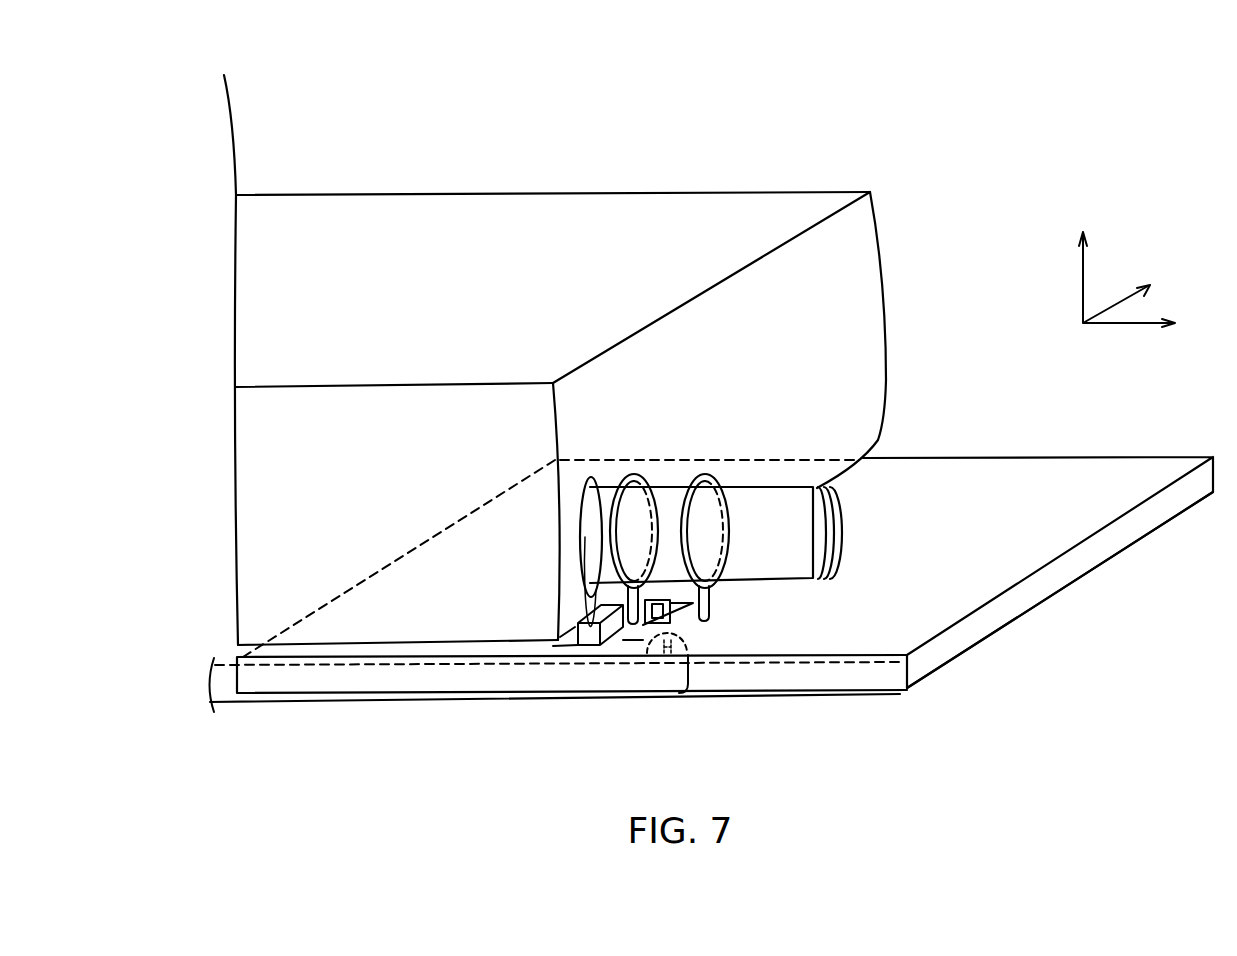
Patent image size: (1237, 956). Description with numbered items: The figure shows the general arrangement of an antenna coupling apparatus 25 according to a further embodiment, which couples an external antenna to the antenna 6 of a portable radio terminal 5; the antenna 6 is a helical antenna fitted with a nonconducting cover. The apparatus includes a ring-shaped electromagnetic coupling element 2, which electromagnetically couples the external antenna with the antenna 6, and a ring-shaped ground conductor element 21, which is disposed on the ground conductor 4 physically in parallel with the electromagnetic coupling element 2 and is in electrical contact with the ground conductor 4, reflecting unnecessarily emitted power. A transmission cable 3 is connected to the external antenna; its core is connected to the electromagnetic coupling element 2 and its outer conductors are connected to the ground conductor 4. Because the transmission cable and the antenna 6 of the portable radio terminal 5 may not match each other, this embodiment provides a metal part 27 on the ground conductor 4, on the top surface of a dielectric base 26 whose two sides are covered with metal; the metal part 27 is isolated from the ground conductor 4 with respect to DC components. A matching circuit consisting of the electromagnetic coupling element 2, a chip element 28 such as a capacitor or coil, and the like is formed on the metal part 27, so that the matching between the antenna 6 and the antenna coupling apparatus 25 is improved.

The antenna coupling apparatus 25 is at (920, 110).
The portable radio terminal 5 is at (629, 201).
The ground conductor 4 is at (1055, 462).
The dielectric base 26 is at (1132, 533).
The transmission cable 3 is at (347, 703).
The antenna 6 is at (793, 502).
The electromagnetic coupling element 2 is at (604, 550).
The ground conductor element 21 is at (712, 595).
The chip element 28 is at (588, 643).
The metal part 27 is at (645, 621).